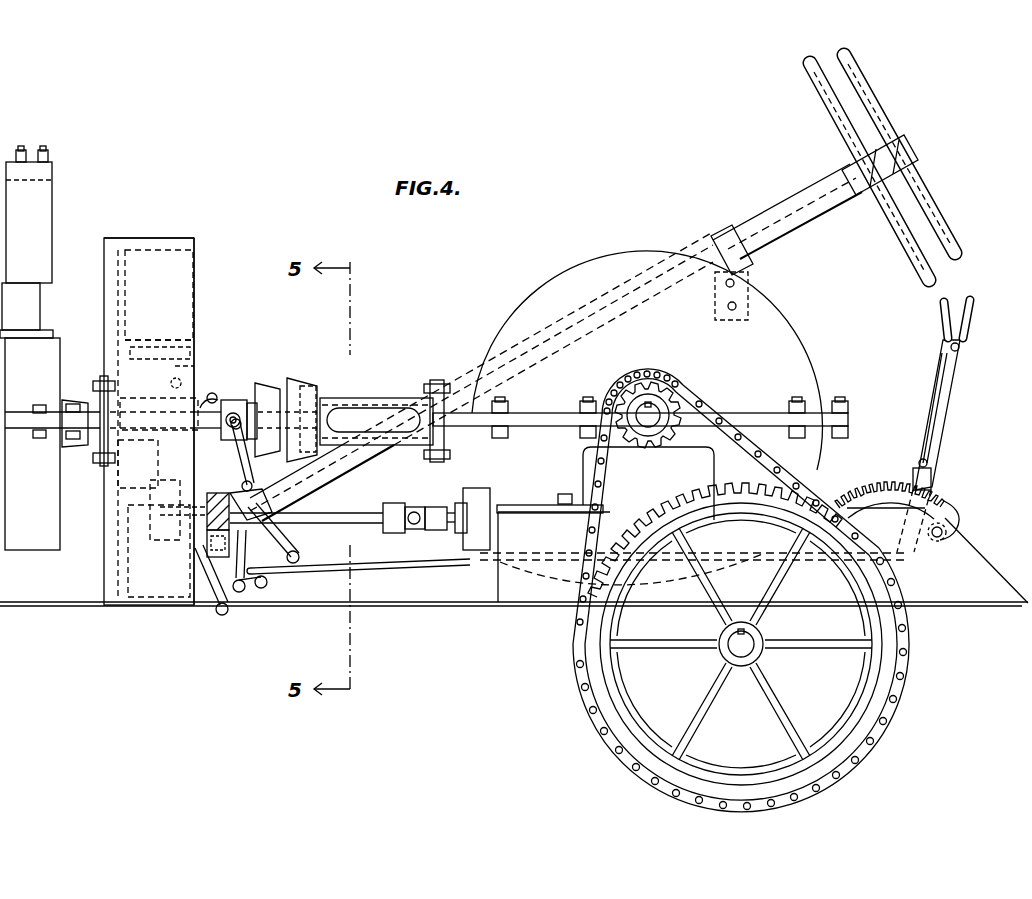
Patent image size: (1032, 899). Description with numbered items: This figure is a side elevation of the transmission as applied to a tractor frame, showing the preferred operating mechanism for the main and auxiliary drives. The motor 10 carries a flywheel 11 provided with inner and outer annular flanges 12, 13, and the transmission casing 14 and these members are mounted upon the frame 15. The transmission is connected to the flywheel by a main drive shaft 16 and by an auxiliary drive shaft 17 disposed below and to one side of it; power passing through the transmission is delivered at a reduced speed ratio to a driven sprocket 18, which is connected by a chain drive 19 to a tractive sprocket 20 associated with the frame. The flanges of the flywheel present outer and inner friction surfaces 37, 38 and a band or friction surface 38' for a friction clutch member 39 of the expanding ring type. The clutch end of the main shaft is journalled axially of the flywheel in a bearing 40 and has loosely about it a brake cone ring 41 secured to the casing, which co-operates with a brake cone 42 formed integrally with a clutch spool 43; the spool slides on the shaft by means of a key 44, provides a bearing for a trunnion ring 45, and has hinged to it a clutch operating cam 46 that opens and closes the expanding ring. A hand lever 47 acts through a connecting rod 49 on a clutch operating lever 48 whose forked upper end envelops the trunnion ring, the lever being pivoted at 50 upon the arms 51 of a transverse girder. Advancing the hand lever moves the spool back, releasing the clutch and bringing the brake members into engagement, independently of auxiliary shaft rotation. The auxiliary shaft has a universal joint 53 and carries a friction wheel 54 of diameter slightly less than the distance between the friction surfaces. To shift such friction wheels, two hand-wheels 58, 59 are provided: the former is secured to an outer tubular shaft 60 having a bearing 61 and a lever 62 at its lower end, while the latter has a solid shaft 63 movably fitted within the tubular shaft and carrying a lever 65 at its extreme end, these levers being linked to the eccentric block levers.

The motor 10 is at (40, 210).
The flywheel 11 is at (158, 243).
The inner annular flange 12 is at (170, 348).
The outer annular flange 13 is at (195, 241).
The transmission casing 14 is at (603, 258).
The frame 15 is at (530, 606).
The main drive shaft 16 is at (362, 412).
The auxiliary drive shaft 17 is at (358, 520).
The driven sprocket 18 is at (665, 392).
The chain drive 19 is at (798, 478).
The tractive sprocket 20 is at (578, 700).
The outer friction surface 37 is at (196, 271).
The inner friction surface 38 is at (176, 325).
The band or friction surface 38' is at (159, 295).
The friction clutch member 39 is at (192, 366).
The bearing 40 is at (126, 452).
The brake cone ring 41 is at (298, 393).
The brake cone 42 is at (264, 390).
The clutch spool 43 is at (236, 412).
The key 44 is at (312, 397).
The trunnion ring 45 is at (236, 392).
The clutch operating cam 46 is at (222, 404).
The hand lever 47 is at (960, 368).
The clutch operating lever 48 is at (238, 467).
The connecting rod 49 is at (402, 566).
The pivot 50 is at (250, 486).
The arms 51 is at (215, 514).
The universal joint 53 is at (418, 506).
The friction wheel 54 is at (159, 538).
The hand-wheel 58 is at (812, 86).
The hand-wheel 59 is at (858, 78).
The outer tubular shaft 60 is at (778, 213).
The bearing 61 is at (724, 238).
The lever 62 is at (283, 538).
The solid shaft 63 is at (915, 155).
The lever 65 is at (215, 612).